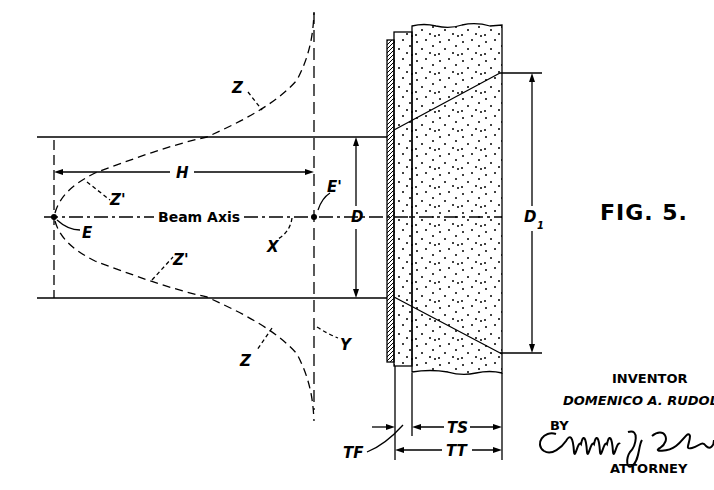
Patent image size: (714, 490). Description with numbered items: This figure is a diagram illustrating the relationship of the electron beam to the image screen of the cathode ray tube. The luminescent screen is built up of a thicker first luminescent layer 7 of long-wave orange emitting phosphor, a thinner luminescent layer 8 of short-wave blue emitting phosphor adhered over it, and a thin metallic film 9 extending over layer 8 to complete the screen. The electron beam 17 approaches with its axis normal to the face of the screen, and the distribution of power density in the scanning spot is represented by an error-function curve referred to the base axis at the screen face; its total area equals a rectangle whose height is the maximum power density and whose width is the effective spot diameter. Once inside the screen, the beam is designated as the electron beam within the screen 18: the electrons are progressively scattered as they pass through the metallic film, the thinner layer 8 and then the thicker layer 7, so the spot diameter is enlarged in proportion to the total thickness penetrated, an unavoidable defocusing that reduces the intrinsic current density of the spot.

The first layer of luminescent material 7 is at (440, 360).
The thinner luminescent layer 8 is at (402, 367).
The thin metallic film 9 is at (390, 352).
The electron beam 17 is at (98, 137).
The electron beam within the luminescent screen 18 is at (473, 88).